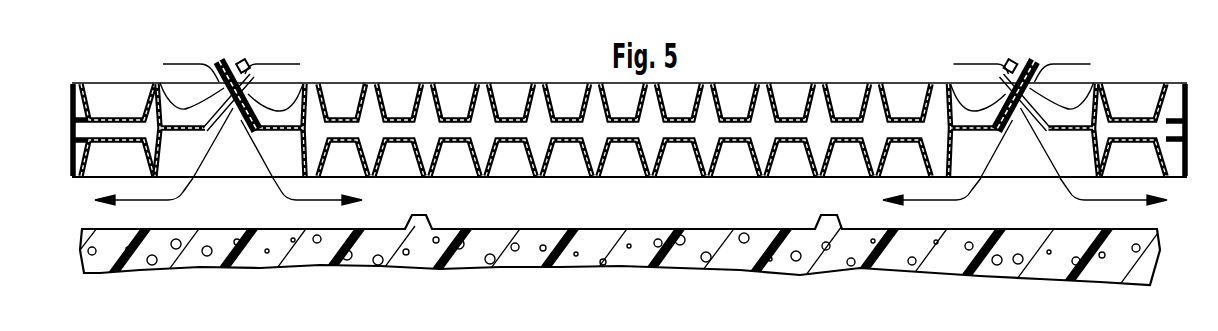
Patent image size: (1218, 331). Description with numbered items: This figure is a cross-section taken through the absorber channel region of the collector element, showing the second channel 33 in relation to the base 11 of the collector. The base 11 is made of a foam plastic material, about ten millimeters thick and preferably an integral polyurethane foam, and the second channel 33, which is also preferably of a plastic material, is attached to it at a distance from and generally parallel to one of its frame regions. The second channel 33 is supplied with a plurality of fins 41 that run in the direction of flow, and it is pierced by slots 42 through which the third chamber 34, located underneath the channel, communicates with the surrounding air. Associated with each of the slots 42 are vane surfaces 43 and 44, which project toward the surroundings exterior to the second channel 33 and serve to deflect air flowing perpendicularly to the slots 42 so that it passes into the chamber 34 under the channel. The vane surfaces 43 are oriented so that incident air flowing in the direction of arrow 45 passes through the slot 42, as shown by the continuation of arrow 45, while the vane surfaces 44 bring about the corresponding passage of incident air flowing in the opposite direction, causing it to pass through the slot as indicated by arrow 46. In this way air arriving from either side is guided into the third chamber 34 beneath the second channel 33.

The base 11 is at (648, 230).
The second channel 33 is at (514, 98).
The third chamber 34 is at (552, 210).
The fins 41 is at (416, 88).
The slots 42 is at (235, 153).
The vane surfaces 43 is at (250, 62).
The vane surfaces 44 is at (217, 62).
The arrow 45 is at (136, 200).
The arrow 46 is at (333, 200).